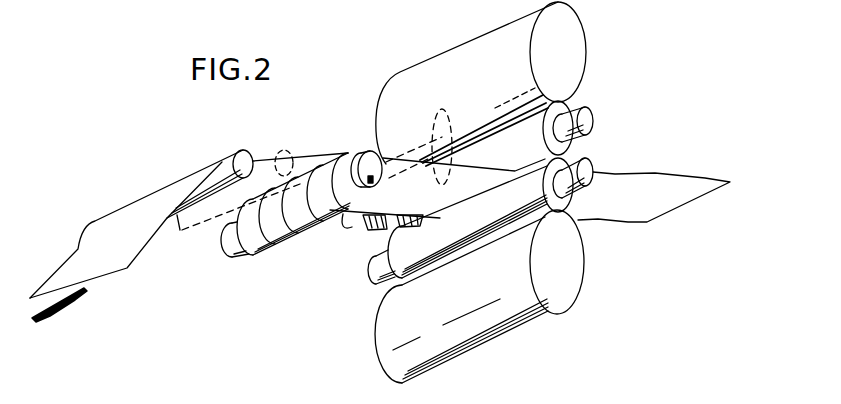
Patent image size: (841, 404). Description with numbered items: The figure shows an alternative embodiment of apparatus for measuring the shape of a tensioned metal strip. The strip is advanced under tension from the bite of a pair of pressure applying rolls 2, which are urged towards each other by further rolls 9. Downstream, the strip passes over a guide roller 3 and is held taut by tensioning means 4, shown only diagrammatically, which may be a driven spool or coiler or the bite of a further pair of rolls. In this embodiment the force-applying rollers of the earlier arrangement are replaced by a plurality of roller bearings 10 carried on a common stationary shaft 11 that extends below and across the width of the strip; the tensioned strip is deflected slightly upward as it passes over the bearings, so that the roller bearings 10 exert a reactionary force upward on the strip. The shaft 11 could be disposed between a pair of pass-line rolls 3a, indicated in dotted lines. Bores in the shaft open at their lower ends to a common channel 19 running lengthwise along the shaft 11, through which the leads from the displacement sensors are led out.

The pressure applying rolls 2 is at (518, 155).
The guide roller 3 is at (227, 161).
The pass-line rolls 3a is at (287, 150).
The tensioning means 4 is at (78, 292).
The further rolls 9 is at (492, 84).
The roller bearings 10 is at (278, 244).
The common stationary shaft 11 is at (224, 257).
The common channel 19 is at (371, 184).